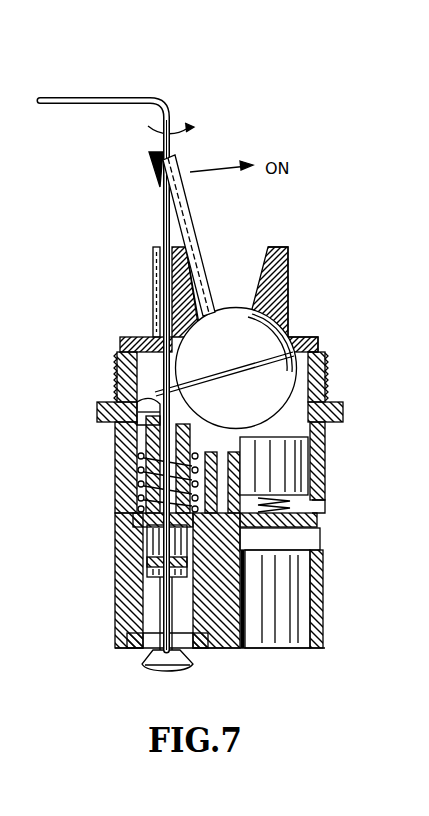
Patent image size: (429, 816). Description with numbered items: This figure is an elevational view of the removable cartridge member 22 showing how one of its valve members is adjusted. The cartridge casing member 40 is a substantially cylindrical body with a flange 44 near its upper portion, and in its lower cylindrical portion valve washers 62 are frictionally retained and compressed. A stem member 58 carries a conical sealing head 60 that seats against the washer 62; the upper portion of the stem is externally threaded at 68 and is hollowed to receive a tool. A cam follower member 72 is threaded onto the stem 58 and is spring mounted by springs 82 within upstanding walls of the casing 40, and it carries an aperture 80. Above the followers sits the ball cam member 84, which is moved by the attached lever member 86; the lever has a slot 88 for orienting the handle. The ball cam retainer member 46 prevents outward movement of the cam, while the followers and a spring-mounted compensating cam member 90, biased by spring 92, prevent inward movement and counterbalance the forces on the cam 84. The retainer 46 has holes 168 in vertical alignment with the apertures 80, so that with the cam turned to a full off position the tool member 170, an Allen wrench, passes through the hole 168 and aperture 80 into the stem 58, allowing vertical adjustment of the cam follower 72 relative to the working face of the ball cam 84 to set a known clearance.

The tool member 170 is at (72, 97).
The slot 88 is at (173, 170).
The lever member 86 is at (192, 218).
The ball cam member 84 is at (229, 283).
The removable cartridge member 22 is at (296, 271).
The ball cam retainer member 46 is at (288, 309).
The holes 168 is at (153, 280).
The apertures 80 is at (140, 408).
The flange 44 is at (343, 404).
The cam follower member 72 is at (138, 440).
The springs 82 is at (138, 470).
The externally threaded portion 68 is at (140, 493).
The cartridge casing member 40 is at (241, 535).
The compensating cam member 90 is at (284, 475).
The spring 92 is at (301, 512).
The stem member 58 is at (168, 606).
The valve washers 62 is at (132, 655).
The conical sealing head 60 is at (187, 672).